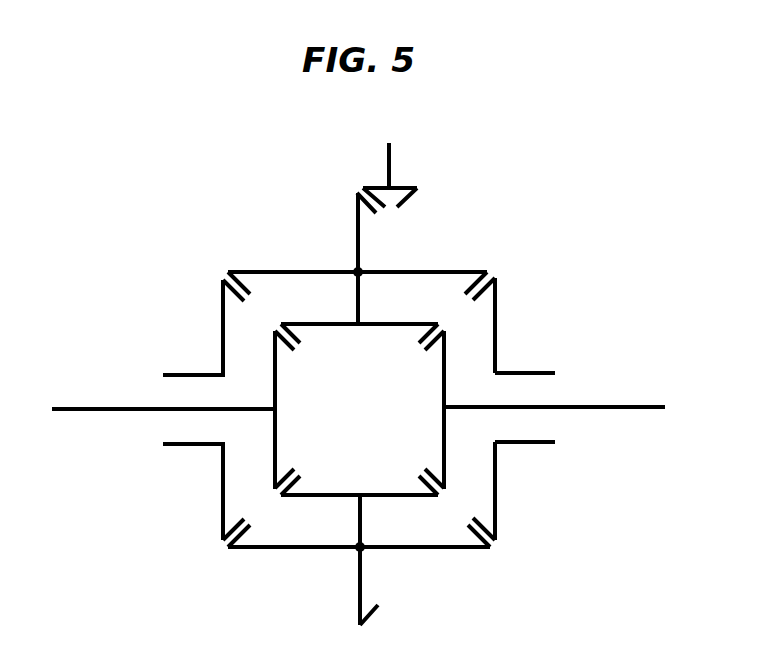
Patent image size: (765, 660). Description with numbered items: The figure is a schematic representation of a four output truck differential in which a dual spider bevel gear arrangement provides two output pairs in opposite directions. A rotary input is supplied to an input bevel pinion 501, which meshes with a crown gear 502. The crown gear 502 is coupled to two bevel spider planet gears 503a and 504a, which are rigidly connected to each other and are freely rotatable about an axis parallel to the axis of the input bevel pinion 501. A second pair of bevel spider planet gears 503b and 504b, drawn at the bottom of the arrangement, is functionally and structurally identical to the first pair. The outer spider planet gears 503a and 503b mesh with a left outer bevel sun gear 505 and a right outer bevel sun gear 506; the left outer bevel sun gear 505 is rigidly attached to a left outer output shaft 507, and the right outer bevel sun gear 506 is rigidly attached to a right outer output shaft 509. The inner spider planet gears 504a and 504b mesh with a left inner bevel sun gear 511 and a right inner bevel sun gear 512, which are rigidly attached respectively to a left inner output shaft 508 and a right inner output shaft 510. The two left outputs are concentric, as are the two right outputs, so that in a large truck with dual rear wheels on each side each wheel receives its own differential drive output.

The input bevel pinion 501 is at (378, 184).
The crown gear 502 is at (358, 228).
The bevel spider planet gear 503a is at (268, 272).
The bevel spider planet gear 503b is at (303, 548).
The bevel spider planet gear 504a is at (407, 323).
The bevel spider planet gear 504b is at (405, 496).
The left outer bevel sun gear 505 is at (221, 305).
The right outer bevel sun gear 506 is at (497, 305).
The left outer output shaft 507 is at (190, 375).
The left inner output shaft 508 is at (108, 409).
The right outer output shaft 509 is at (520, 373).
The right inner output shaft 510 is at (622, 407).
The left inner bevel sun gear 511 is at (275, 462).
The right inner bevel sun gear 512 is at (445, 457).